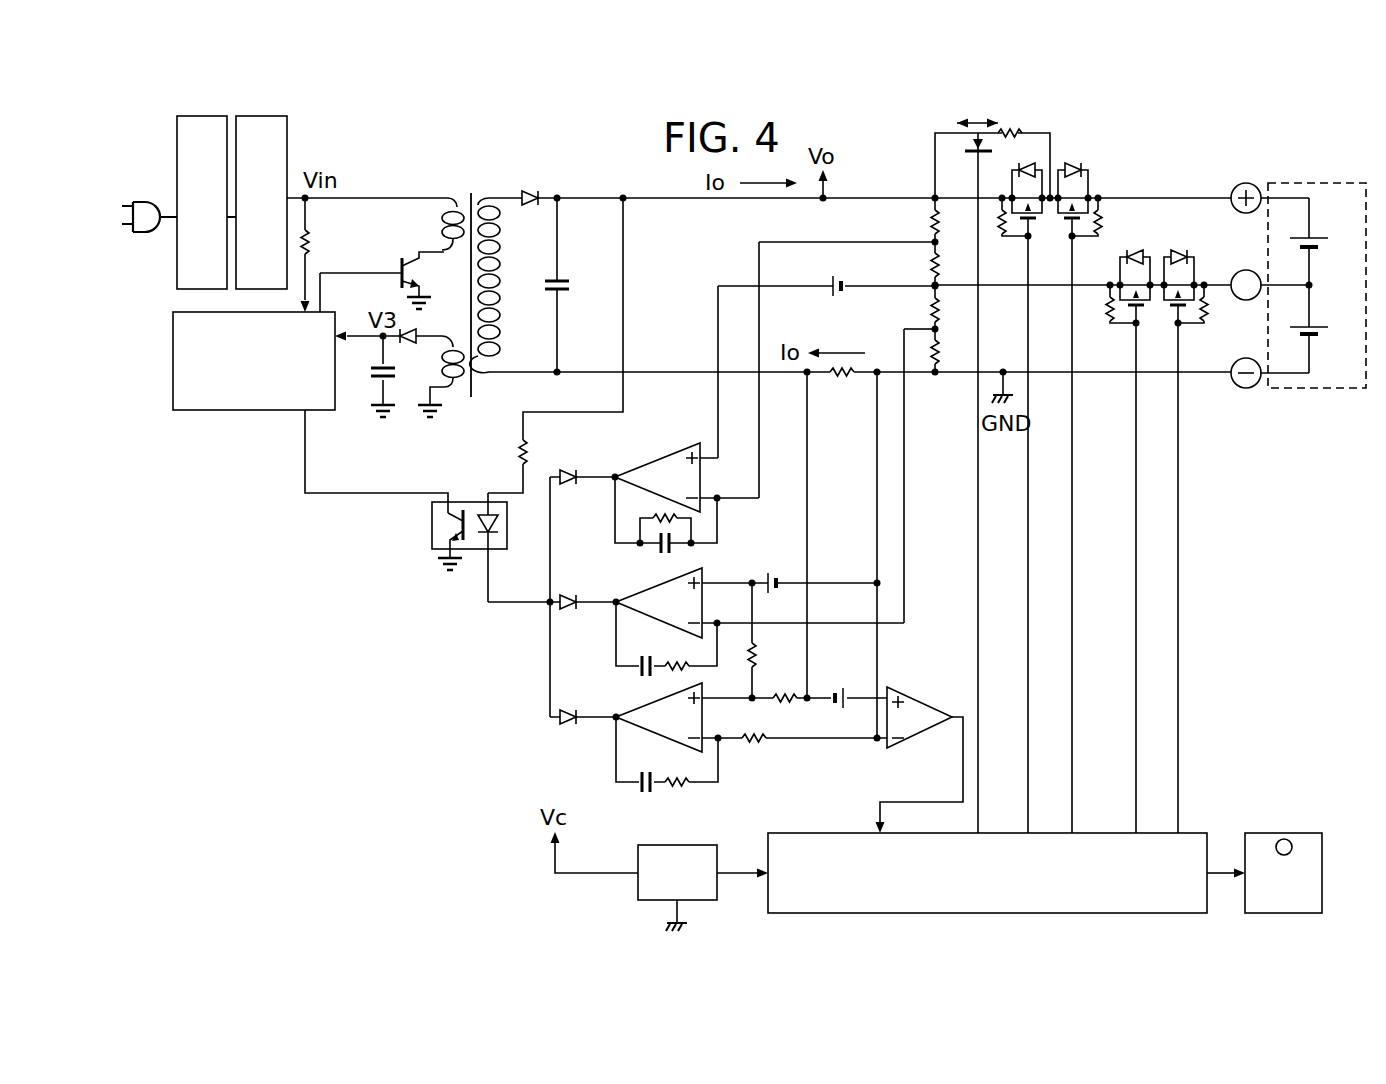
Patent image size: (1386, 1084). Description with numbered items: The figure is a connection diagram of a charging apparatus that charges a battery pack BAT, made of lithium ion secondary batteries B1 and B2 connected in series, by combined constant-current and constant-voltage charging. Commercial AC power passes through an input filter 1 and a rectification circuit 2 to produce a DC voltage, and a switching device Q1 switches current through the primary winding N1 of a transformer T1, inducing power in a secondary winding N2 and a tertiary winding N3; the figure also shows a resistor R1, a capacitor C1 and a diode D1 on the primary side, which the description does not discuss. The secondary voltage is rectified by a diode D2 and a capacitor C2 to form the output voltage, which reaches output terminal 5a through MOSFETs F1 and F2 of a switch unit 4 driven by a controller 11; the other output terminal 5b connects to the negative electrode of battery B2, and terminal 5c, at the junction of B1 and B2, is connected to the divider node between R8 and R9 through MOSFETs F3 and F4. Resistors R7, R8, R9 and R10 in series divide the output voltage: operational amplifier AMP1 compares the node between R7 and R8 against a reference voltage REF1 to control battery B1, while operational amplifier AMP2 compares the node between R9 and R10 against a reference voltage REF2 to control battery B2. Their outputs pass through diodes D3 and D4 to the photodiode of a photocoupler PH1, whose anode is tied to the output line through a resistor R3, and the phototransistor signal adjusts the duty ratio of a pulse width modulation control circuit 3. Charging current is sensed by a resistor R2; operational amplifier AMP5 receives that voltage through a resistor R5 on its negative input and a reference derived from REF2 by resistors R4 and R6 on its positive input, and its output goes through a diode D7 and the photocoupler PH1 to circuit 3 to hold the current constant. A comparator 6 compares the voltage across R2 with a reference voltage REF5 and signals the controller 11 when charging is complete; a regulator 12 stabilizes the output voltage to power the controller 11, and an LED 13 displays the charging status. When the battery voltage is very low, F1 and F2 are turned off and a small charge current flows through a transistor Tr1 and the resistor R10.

The input filter 1 is at (215, 116).
The rectification circuit 2 is at (271, 116).
The pulse width modulation control circuit 3 is at (240, 410).
The switch unit 4 is at (1108, 100).
The output terminal 5a is at (1246, 183).
The output terminal 5b is at (1246, 388).
The terminal 5c is at (1246, 300).
The comparator 6 is at (918, 698).
The controller 11 is at (800, 833).
The regulator 12 is at (662, 845).
The LED 13 is at (1297, 833).
The resistor R1 is at (324, 255).
The current detection resistor R2 is at (842, 388).
The resistor R3 is at (506, 466).
The resistor R4 is at (769, 640).
The resistor R5 is at (802, 755).
The resistor R6 is at (779, 713).
The resistor R7 is at (919, 220).
The resistor R8 is at (951, 264).
The resistor R9 is at (919, 307).
The resistor R10 is at (990, 239).
The capacitor C1 is at (370, 376).
The capacitor C2 is at (576, 285).
The diode D1 is at (404, 345).
The diode D2 is at (540, 184).
The diode D3 is at (582, 464).
The diode D4 is at (583, 589).
The diode D7 is at (583, 704).
The switching device Q1 is at (402, 262).
The transformer T1 is at (483, 271).
The primary winding N1 is at (454, 194).
The secondary winding N2 is at (494, 194).
The tertiary winding N3 is at (444, 336).
The photocoupler PH1 is at (432, 528).
The transistor Tr1 is at (977, 158).
The MOSFET F1 is at (1016, 208).
The MOSFET F2 is at (1084, 208).
The MOSFET F3 is at (1124, 295).
The MOSFET F4 is at (1190, 295).
The operational amplifier AMP1 is at (686, 498).
The operational amplifier AMP2 is at (759, 622).
The operational amplifier AMP5 is at (683, 737).
The reference voltage REF1 is at (826, 302).
The reference voltage REF2 is at (812, 569).
The reference voltage REF5 is at (847, 686).
The battery pack BAT is at (1317, 262).
The lithium ion secondary battery B1 is at (1326, 241).
The lithium ion secondary battery B2 is at (1326, 329).